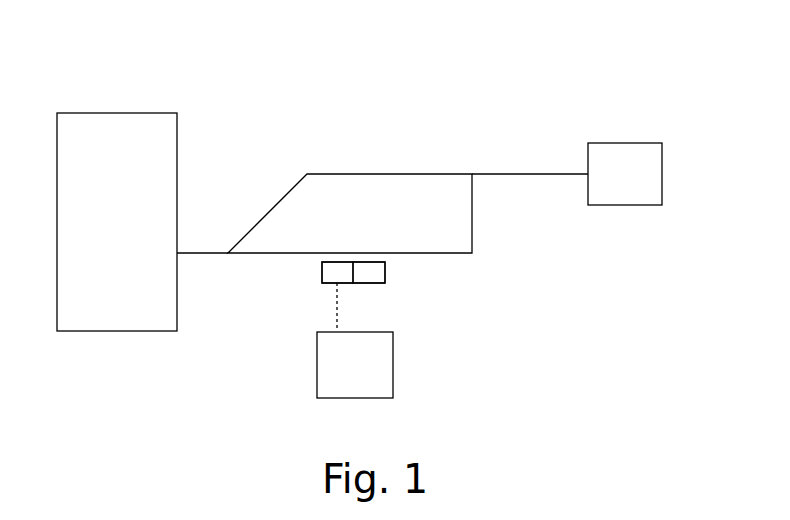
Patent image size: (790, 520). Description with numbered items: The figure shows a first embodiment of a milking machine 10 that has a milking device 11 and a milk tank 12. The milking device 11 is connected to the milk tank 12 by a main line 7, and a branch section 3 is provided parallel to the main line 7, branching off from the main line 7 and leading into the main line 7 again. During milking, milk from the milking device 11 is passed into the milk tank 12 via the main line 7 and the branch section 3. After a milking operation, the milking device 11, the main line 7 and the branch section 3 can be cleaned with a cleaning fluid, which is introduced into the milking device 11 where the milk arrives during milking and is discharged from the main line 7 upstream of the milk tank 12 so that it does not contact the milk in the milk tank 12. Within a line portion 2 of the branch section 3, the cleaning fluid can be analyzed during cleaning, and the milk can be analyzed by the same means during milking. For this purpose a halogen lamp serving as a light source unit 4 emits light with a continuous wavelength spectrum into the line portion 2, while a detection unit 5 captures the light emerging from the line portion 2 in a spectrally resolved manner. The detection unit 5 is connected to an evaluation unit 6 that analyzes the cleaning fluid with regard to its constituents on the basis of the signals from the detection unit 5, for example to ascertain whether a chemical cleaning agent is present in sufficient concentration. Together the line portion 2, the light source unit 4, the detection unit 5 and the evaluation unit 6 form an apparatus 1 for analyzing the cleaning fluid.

The apparatus 1 is at (303, 381).
The line portion 2 is at (386, 249).
The branch section 3 is at (257, 255).
The light source unit 4 is at (386, 272).
The detection unit 5 is at (322, 280).
The evaluation unit 6 is at (393, 364).
The main line 7 is at (388, 174).
The milking machine 10 is at (635, 91).
The milking device 11 is at (641, 188).
The milk tank 12 is at (136, 235).